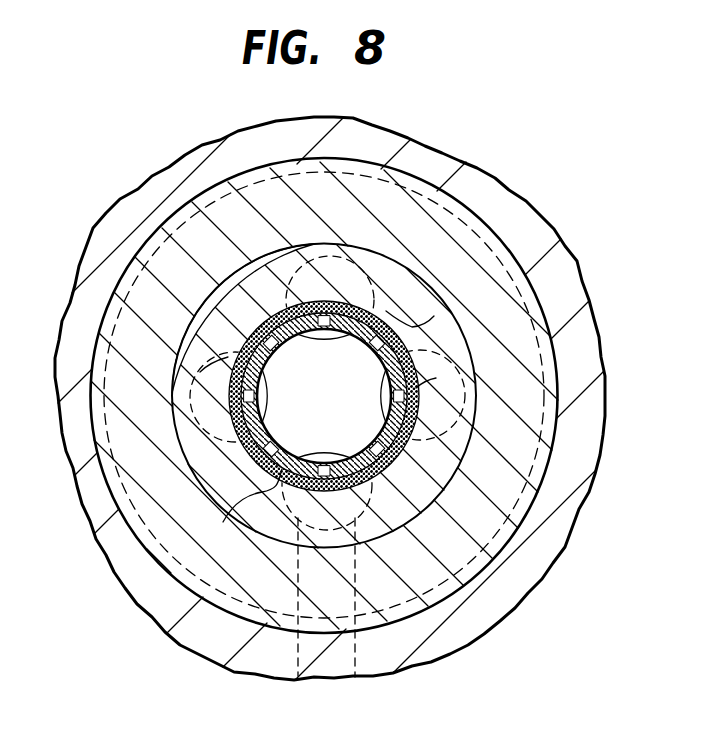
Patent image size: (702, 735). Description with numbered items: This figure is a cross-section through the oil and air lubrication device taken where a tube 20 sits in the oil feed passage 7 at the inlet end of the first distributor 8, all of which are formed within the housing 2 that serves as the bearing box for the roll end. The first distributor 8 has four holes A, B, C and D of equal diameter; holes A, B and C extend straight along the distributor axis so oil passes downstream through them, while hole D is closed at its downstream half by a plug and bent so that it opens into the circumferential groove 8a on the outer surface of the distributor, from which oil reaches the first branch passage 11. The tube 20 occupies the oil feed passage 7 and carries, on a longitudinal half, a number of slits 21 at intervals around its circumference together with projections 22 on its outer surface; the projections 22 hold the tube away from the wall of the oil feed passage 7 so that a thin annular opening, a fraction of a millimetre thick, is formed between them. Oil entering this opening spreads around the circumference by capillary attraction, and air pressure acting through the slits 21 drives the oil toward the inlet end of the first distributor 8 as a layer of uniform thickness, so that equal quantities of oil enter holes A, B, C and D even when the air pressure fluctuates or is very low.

The housing 2 is at (103, 523).
The oil feed passage 7 is at (437, 466).
The first distributor 8 is at (457, 218).
The circumferential groove 8a is at (545, 380).
The first branch passage 11 is at (362, 656).
The tube 20 is at (333, 302).
The slit 21 is at (231, 511).
The projection 22 is at (411, 320).
The hole A is at (266, 397).
The hole B is at (320, 338).
The hole C is at (386, 390).
The hole D is at (330, 452).